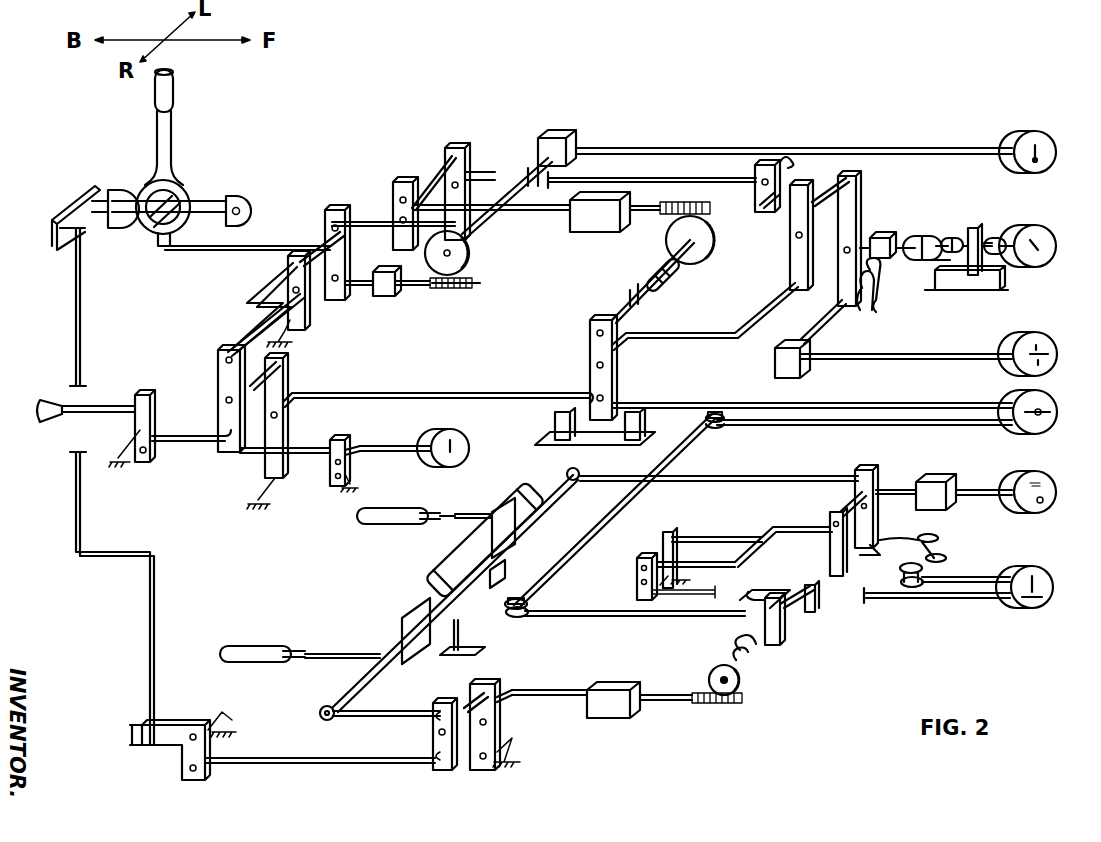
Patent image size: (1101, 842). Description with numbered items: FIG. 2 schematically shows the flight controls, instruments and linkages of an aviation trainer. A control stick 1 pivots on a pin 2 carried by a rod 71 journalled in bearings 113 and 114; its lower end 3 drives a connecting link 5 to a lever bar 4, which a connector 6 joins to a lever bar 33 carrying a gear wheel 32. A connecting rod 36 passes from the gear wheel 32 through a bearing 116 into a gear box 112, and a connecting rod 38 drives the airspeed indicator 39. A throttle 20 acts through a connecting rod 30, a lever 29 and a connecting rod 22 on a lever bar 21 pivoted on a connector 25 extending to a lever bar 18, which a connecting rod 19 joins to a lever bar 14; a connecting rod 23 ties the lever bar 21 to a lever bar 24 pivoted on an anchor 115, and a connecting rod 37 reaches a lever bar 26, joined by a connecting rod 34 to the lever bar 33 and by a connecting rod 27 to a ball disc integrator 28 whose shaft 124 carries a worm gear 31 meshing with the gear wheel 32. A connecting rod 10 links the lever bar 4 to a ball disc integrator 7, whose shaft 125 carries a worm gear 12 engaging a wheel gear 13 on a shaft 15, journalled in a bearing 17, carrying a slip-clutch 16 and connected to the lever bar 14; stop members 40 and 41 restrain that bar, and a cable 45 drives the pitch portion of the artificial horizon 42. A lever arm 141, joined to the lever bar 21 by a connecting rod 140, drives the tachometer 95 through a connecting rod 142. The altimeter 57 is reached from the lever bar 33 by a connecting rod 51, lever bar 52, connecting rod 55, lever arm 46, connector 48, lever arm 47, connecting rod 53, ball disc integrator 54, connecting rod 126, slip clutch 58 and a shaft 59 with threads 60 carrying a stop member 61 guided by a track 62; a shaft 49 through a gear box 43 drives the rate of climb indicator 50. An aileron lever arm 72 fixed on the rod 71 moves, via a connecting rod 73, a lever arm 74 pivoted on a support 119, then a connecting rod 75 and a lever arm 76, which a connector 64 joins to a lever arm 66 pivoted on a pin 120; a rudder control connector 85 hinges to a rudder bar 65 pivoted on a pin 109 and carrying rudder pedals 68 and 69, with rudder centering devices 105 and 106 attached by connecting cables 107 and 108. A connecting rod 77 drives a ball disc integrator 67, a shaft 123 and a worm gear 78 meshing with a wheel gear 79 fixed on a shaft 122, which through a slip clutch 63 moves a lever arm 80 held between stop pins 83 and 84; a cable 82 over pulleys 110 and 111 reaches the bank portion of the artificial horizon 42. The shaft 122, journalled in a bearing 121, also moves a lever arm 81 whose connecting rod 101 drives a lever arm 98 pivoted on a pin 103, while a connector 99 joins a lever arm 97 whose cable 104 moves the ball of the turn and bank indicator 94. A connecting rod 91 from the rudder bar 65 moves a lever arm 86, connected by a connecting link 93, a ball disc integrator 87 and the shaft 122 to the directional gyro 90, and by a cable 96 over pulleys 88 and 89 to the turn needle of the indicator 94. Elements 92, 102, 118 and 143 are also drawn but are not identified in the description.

The control lever 1 is at (172, 124).
The ball joint 2 is at (152, 222).
The lever rod 3 is at (160, 252).
The bracket 4 is at (392, 208).
The rod 5 is at (256, 252).
The link 6 is at (424, 182).
The valve block 7 is at (582, 232).
The rod 10 is at (505, 214).
The spring 12 is at (698, 200).
The wheel 13 is at (719, 236).
The bracket 14 is at (588, 342).
The link 15 is at (686, 256).
The roller 16 is at (662, 276).
The pin 17 is at (638, 294).
The bracket 18 is at (290, 428).
The rod 19 is at (428, 396).
The pedal 20 is at (44, 404).
The bracket 21 is at (214, 378).
The rod 22 is at (206, 446).
The link 23 is at (248, 332).
The link 24 is at (286, 272).
The link 25 is at (290, 370).
The block 26 is at (356, 286).
The rod 27 is at (406, 300).
The spring 28 is at (450, 285).
The bracket 29 is at (158, 410).
The rod 30 is at (96, 412).
The rod 31 is at (464, 280).
The wheel 32 is at (474, 254).
The bracket 33 is at (464, 163).
The bracket 34 is at (354, 212).
The link 36 is at (476, 224).
The bracket 37 is at (308, 302).
The shaft 38 is at (698, 144).
The knob 39 is at (1012, 136).
The base support 40 is at (550, 430).
The base support 41 is at (640, 424).
The knob 42 is at (1016, 393).
The block 43 is at (802, 372).
The shaft 45 is at (666, 398).
The bracket 46 is at (790, 262).
The bracket 47 is at (858, 196).
The link 48 is at (860, 312).
The shaft 49 is at (902, 358).
The knob 50 is at (1056, 334).
The rod 51 is at (684, 180).
The rod 52 is at (700, 330).
The block 53 is at (874, 236).
The spool 54 is at (912, 232).
The bracket 55 is at (772, 214).
The knob 57 is at (1048, 222).
The spool 58 is at (956, 236).
The shaft 59 is at (944, 258).
The plate 60 is at (992, 226).
The spool 61 is at (1010, 262).
The base 62 is at (988, 290).
The cam 63 is at (742, 644).
The bracket 64 is at (468, 694).
The cylinder 65 is at (514, 530).
The link 66 is at (500, 692).
The block 67 is at (636, 678).
The plate 68 is at (400, 610).
The plate 69 is at (490, 532).
The shaft 71 is at (218, 202).
The plate 72 is at (76, 196).
The rod 73 is at (82, 330).
The bracket 74 is at (162, 726).
The rod 75 is at (312, 766).
The bracket 76 is at (434, 748).
The rod 77 is at (576, 692).
The spring 78 is at (710, 706).
The gear 79 is at (740, 680).
The bracket 80 is at (762, 624).
The bracket 81 is at (844, 554).
The rod 82 is at (636, 486).
The link 83 is at (746, 594).
The link 84 is at (796, 594).
The rod 85 is at (406, 710).
The bracket 86 is at (876, 478).
The block 87 is at (956, 478).
The disc 88 is at (910, 572).
The disc 89 is at (934, 538).
The knob 90 is at (1024, 474).
The rod 91 is at (754, 478).
The link 92 is at (836, 506).
The rod 93 is at (884, 496).
The knob 94 is at (1036, 560).
The knob 95 is at (440, 428).
The shaft 96 is at (990, 580).
The bracket 97 is at (636, 586).
The rod 98 is at (676, 552).
The bracket 99 is at (656, 548).
The rod 101 is at (728, 532).
The rod 102 is at (744, 542).
The rod 103 is at (680, 574).
The shaft 104 is at (950, 596).
The cylinder 105 is at (400, 508).
The cylinder 106 is at (278, 644).
The rod 107 is at (494, 504).
The rod 108 is at (352, 654).
The support 109 is at (458, 610).
The disc 110 is at (522, 618).
The disc 111 is at (724, 432).
The block 112 is at (562, 130).
The bearing 113 is at (138, 188).
The bearing 114 is at (238, 206).
The ground anchor 115 is at (298, 330).
The pin 116 is at (527, 180).
The ground anchor 118 is at (267, 486).
The ground anchor 119 is at (233, 710).
The ground anchor 120 is at (510, 742).
The plate 121 is at (818, 592).
The shaft 122 is at (734, 654).
The rod 123 is at (682, 704).
The rod 124 is at (456, 300).
The rod 125 is at (640, 224).
The hook 126 is at (872, 282).
The rod 140 is at (246, 460).
The bracket 141 is at (350, 456).
The rod 142 is at (365, 442).
The ground anchor 143 is at (350, 474).